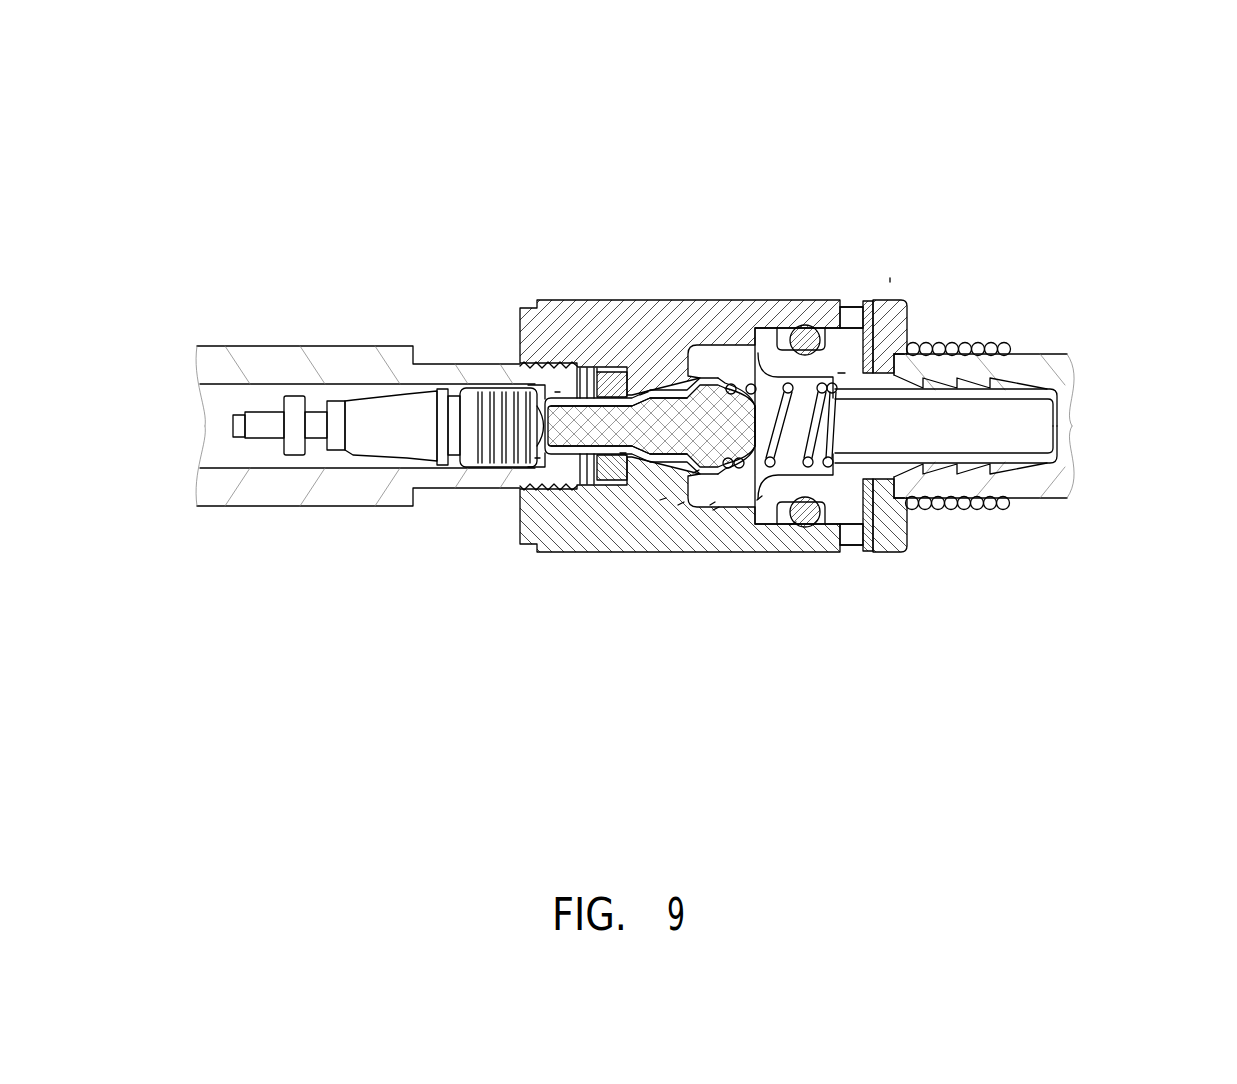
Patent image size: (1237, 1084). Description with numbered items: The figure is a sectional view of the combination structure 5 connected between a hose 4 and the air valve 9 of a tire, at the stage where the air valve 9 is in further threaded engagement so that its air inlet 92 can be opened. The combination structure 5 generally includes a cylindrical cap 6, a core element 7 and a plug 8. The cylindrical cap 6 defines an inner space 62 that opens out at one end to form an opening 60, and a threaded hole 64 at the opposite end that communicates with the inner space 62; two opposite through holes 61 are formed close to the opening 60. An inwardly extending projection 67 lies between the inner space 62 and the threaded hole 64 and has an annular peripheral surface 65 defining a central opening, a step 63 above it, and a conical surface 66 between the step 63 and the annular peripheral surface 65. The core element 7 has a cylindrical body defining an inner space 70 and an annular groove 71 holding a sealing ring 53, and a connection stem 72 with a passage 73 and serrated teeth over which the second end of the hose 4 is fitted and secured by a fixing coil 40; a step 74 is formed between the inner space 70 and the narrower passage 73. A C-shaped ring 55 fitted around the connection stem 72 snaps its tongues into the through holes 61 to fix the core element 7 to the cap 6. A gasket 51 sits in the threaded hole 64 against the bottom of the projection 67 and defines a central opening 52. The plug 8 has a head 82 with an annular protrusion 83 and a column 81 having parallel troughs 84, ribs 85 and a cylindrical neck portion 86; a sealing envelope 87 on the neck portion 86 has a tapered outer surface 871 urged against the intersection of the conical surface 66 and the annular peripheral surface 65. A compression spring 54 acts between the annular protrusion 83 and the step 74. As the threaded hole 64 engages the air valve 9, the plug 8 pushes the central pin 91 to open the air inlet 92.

The hose 4 is at (1052, 369).
The combination structure 5 is at (890, 279).
The cylindrical cap 6 is at (806, 308).
The core element 7 is at (838, 373).
The plug 8 is at (717, 377).
The air valve 9 is at (300, 356).
The fixing coil 40 is at (1000, 345).
The gasket 51 is at (612, 395).
The central opening 52 is at (620, 453).
The sealing ring 53 is at (790, 525).
The compression spring 54 is at (875, 347).
The C-shaped ring 55 is at (866, 322).
The opening 60 is at (757, 413).
The through holes 61 is at (853, 320).
The inner space 62 is at (757, 500).
The step 63 is at (710, 505).
The threaded hole 64 is at (578, 390).
The annular peripheral surface 65 is at (640, 395).
The conical surface 66 is at (727, 385).
The inwardly extending projection 67 is at (615, 380).
The inner space 70 is at (812, 520).
The annular groove 71 is at (823, 517).
The connection stem 72 is at (1007, 388).
The passage 73 is at (1007, 423).
The step 74 is at (840, 470).
The column 81 is at (535, 458).
The head 82 is at (925, 508).
The annular protrusion 83 is at (713, 510).
The troughs 84 is at (555, 392).
The ribs 85 is at (580, 383).
The cylindrical neck portion 86 is at (678, 505).
The sealing envelope 87 is at (693, 473).
The outer surface 871 is at (660, 500).
The central pin 91 is at (535, 398).
The air inlet 92 is at (316, 443).